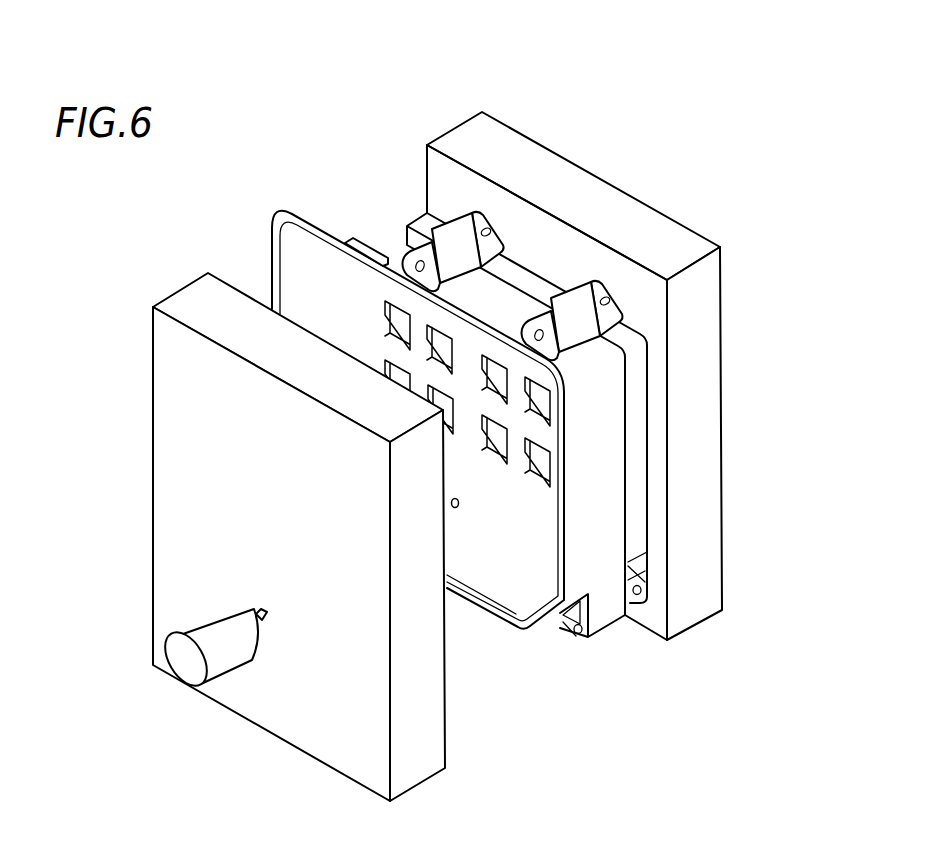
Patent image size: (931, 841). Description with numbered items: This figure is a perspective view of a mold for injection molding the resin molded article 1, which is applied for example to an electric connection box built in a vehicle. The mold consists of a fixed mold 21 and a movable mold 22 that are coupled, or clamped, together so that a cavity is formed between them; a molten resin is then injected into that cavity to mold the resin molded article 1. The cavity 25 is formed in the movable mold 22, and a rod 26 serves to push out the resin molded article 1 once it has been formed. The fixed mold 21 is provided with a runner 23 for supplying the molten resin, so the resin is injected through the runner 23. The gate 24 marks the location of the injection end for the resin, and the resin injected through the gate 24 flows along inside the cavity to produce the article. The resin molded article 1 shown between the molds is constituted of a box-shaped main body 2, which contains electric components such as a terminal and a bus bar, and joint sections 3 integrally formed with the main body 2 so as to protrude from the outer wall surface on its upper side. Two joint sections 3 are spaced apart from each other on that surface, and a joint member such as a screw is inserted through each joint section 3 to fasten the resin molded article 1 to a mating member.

The resin molded article 1 is at (343, 226).
The main body 2 is at (528, 577).
The joint section 3 is at (478, 251).
The fixed mold 21 is at (192, 298).
The movable mold 22 is at (623, 205).
The runner 23 is at (223, 648).
The gate 24 is at (458, 507).
The cavity 25 is at (618, 333).
The rod 26 is at (636, 346).